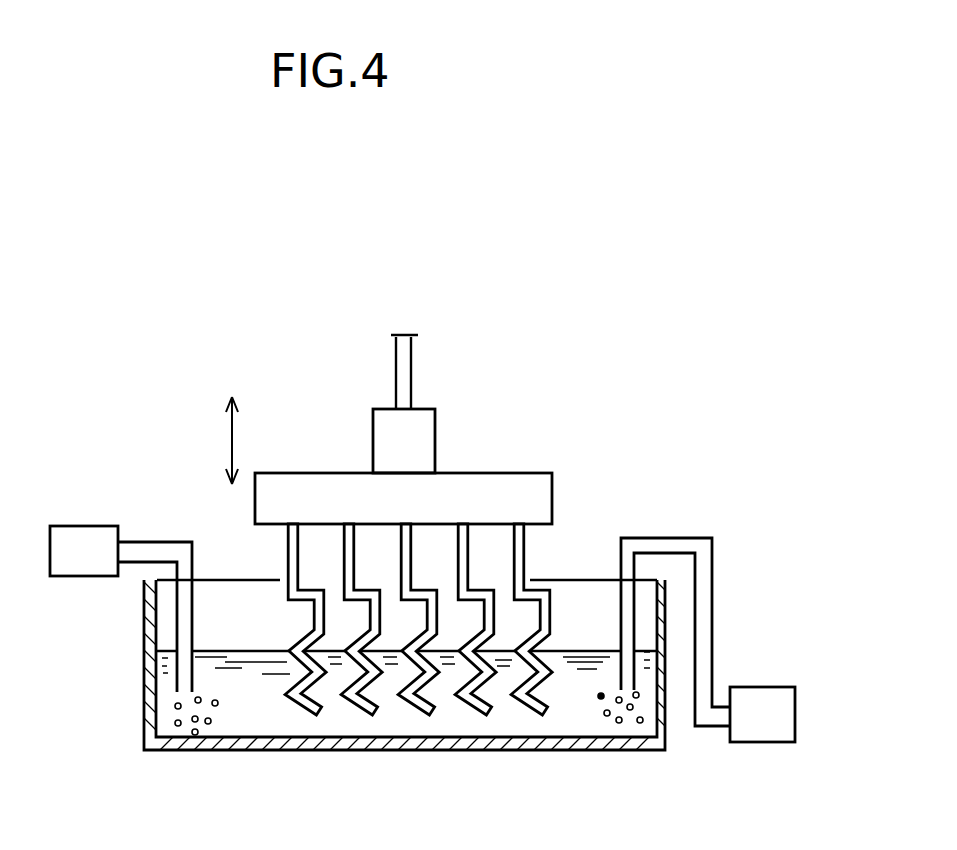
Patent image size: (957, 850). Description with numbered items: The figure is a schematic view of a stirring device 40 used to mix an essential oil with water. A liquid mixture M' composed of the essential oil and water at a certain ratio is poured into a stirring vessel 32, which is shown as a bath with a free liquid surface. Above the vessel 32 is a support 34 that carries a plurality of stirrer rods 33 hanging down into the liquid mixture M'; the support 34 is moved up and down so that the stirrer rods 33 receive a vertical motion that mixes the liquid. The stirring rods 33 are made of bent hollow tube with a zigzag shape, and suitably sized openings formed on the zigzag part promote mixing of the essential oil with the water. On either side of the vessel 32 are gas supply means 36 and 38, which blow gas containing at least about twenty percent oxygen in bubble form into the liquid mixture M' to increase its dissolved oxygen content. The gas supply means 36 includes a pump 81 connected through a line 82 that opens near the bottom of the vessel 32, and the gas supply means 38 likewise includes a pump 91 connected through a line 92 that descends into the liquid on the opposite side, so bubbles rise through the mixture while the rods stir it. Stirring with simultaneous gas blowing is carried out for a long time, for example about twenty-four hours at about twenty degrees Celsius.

The device 40 is at (677, 492).
The support 34 is at (493, 473).
The stirrer rods 33 is at (521, 552).
The stirring vessel 32 is at (144, 712).
The liquid mixture M' is at (407, 746).
The gas supply means 36 is at (87, 512).
The pump 81 is at (77, 578).
The supply pipe 82 is at (156, 542).
The gas supply means 38 is at (718, 568).
The pump 91 is at (773, 687).
The exhaust pipe 92 is at (712, 612).